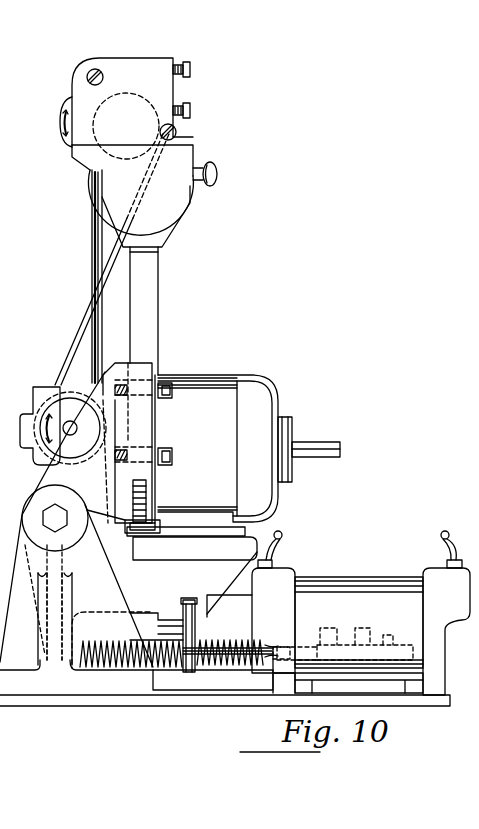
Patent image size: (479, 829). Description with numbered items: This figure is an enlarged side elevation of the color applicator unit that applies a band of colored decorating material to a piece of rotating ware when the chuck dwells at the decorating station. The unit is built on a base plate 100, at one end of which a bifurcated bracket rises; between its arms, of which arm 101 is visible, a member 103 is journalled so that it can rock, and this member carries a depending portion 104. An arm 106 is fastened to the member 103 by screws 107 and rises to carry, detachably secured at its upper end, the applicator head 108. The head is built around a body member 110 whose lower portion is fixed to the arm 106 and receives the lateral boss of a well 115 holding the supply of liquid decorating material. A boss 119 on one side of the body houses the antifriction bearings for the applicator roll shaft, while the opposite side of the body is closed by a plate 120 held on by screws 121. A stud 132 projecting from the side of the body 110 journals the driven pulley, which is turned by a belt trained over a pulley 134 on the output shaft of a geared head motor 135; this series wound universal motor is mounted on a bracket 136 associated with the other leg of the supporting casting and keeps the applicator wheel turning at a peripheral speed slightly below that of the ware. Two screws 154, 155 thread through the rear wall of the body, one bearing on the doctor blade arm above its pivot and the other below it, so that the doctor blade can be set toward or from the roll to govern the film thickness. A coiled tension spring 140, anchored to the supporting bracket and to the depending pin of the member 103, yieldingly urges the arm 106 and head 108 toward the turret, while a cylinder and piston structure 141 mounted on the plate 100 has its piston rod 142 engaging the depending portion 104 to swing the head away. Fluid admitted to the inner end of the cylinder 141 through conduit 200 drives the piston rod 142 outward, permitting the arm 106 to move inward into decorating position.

The base plate 100 is at (178, 702).
The bracket arm 101 is at (76, 521).
The journalled member 103 is at (122, 448).
The depending portion 104 is at (74, 605).
The arm 106 is at (158, 318).
The screws 107 is at (169, 454).
The applicator head 108 is at (195, 139).
The body member 110 is at (146, 219).
The well 115 is at (61, 130).
The boss 119 is at (122, 108).
The plate 120 is at (176, 130).
The screws 121 is at (89, 71).
The stud 132 is at (92, 230).
The pulley 134 is at (63, 426).
The geared head motor 135 is at (249, 448).
The bracket 136 is at (192, 552).
The coiled tension spring 140 is at (188, 660).
The cylinder and piston structure 141 is at (338, 631).
The piston rod 142 is at (182, 604).
The screw 154 is at (188, 62).
The screw 155 is at (188, 105).
The conduit 200 is at (282, 531).